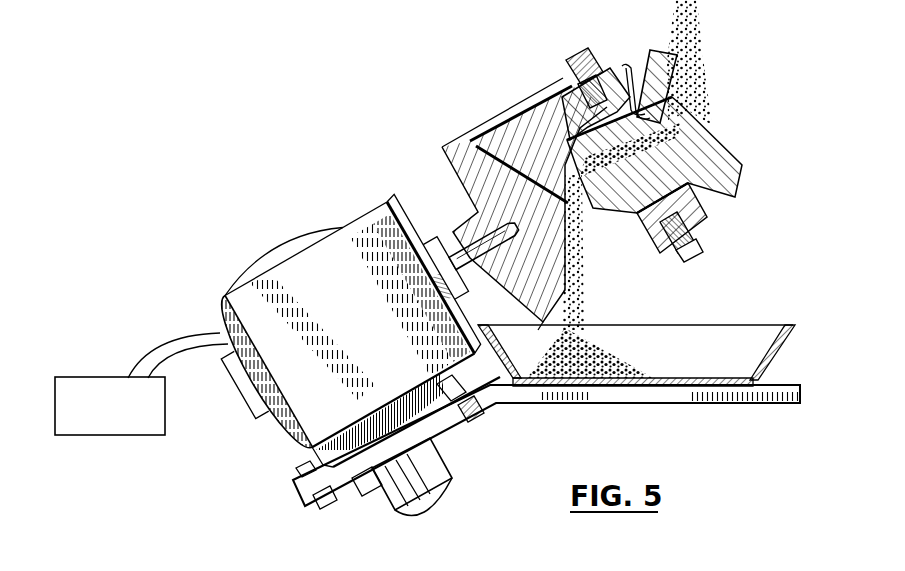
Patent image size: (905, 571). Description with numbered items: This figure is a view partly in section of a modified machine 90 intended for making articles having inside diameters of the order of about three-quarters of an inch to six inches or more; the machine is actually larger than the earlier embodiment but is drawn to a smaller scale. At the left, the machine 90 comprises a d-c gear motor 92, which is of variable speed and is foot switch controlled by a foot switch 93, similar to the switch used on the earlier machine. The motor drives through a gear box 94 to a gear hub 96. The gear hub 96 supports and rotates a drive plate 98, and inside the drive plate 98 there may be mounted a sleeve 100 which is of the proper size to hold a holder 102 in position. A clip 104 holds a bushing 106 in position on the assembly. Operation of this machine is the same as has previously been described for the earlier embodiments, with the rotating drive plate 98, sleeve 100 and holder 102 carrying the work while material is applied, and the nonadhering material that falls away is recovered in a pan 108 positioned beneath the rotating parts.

The modified machine 90 is at (492, 232).
The d-c gear motor 92 is at (279, 241).
The foot switch 93 is at (103, 373).
The gear box 94 is at (389, 203).
The gear hub 96 is at (483, 152).
The drive plate 98 is at (678, 261).
The sleeve 100 is at (687, 205).
The holder 102 is at (744, 179).
The clip 104 is at (655, 118).
The bushing 106 is at (655, 133).
The pan 108 is at (778, 351).